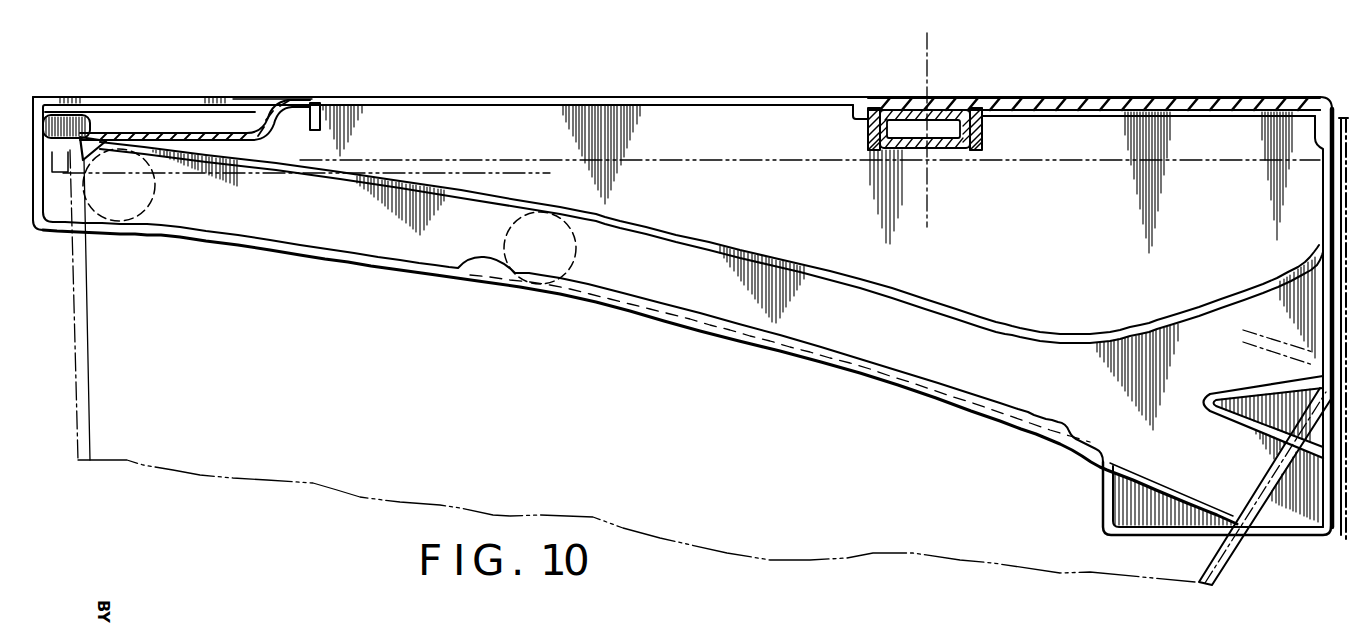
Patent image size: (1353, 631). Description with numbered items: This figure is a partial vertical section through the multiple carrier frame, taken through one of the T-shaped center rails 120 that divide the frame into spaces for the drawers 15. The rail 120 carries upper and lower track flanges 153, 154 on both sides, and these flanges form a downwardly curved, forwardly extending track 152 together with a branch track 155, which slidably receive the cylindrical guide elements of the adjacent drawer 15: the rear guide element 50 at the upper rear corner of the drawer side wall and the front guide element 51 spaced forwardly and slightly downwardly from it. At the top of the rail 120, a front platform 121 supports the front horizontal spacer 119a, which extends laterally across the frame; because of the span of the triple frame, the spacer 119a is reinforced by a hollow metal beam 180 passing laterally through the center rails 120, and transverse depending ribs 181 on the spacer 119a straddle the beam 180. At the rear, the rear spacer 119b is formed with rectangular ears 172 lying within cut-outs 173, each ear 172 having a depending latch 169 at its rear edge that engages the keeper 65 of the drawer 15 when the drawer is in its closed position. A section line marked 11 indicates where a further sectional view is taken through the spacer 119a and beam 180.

The depending latch 169 is at (88, 117).
The rectangular ear 172 is at (133, 132).
The cut-out 173 is at (162, 109).
The rear horizontal top frame wall or spacer 119b is at (233, 102).
The T-shaped center rail 120 is at (697, 104).
The section line 11- 11 is at (975, 222).
The transverse depending rib 181 is at (984, 136).
The hollow metal beam 180 is at (947, 148).
The front horizontal top frame wall or spacer 119a is at (1186, 106).
The front platform 121 is at (1117, 112).
The keeper 65 is at (67, 163).
The rear guide element 50 is at (150, 194).
The front guide element 51 is at (575, 252).
The upper track flange 153 is at (757, 253).
The lower track flange 154 is at (410, 265).
The track 152 is at (925, 338).
The branch track 155 is at (1226, 330).
The drawer 15 is at (1228, 577).